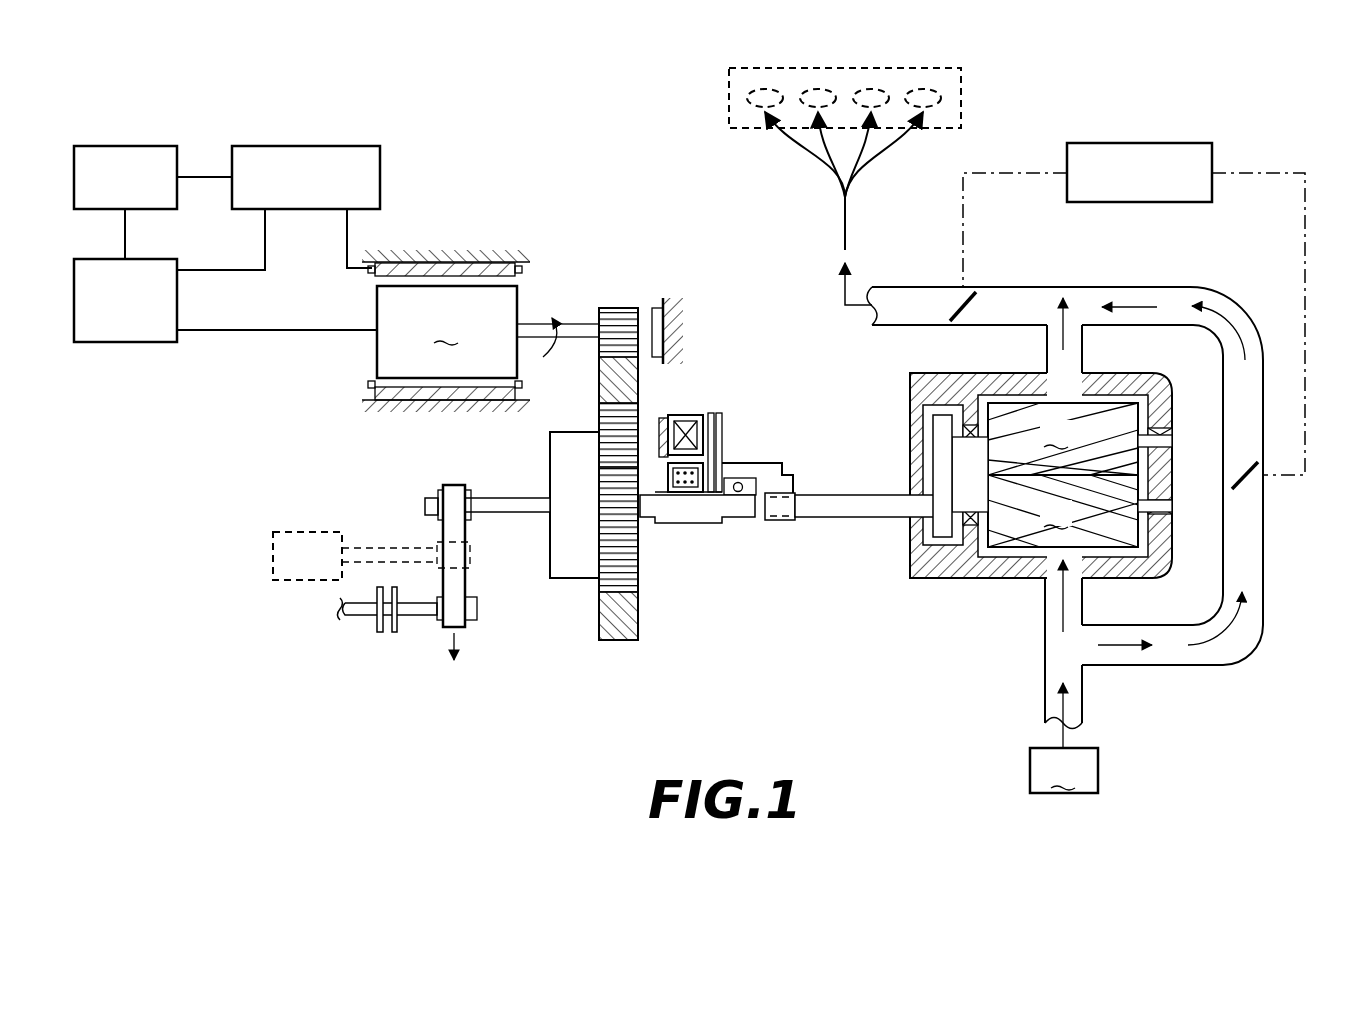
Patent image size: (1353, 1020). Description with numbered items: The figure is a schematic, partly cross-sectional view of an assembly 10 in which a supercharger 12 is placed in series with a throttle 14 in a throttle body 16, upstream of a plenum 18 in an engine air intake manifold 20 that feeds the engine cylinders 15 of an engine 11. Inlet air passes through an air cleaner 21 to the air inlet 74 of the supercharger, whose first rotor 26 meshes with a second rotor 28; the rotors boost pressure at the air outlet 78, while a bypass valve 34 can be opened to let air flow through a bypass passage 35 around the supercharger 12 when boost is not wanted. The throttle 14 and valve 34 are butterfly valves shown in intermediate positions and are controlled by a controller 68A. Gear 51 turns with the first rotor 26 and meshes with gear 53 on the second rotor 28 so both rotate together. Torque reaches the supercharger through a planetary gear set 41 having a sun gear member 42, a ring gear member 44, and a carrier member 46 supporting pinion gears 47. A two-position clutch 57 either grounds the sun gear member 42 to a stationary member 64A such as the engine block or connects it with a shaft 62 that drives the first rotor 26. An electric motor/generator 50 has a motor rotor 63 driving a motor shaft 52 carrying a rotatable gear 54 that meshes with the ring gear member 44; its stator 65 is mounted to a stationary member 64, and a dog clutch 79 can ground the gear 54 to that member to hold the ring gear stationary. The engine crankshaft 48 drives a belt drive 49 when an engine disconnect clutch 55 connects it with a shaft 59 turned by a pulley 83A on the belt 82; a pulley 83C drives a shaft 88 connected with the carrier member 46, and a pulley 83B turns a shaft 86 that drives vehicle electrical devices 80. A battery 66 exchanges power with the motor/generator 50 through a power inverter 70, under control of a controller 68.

The assembly 10 is at (1229, 263).
The engine 11 is at (729, 100).
The supercharger 12 is at (1160, 378).
The throttle 14 is at (950, 322).
The engine cylinders 15 is at (765, 90).
The throttle body 16 is at (1008, 287).
The plenum 18 is at (928, 300).
The engine air intake manifold 20 is at (878, 326).
The air cleaner 21 is at (1064, 738).
The first rotor 26 is at (1063, 511).
The second rotor 28 is at (1063, 439).
The bypass valve 34 is at (1228, 480).
The bypass passage 35 is at (1265, 530).
The planetary gear set 41 is at (570, 612).
The sun gear member 42 is at (618, 500).
The ring gear member 44 is at (612, 380).
The carrier member 46 is at (550, 448).
The pinion gears 47 is at (612, 425).
The engine crankshaft 48 is at (355, 615).
The belt drive 49 is at (400, 498).
The electric motor/generator 50 is at (328, 348).
The gear 51 is at (942, 540).
The motor shaft 52 is at (578, 322).
The gear 53 is at (942, 415).
The rotatable gear 54 is at (618, 308).
The engine disconnect clutch 55 is at (360, 658).
The two-position clutch 57 is at (750, 438).
The shaft 59 is at (420, 615).
The shaft 62 is at (835, 520).
The motor rotor 63 is at (447, 332).
The stationary member 64 is at (483, 250).
The stationary member 64A is at (683, 340).
The stator 65 is at (376, 390).
The battery 66 is at (125, 342).
The controller 68 is at (135, 146).
The controller 68A is at (1130, 143).
The power inverter 70 is at (283, 146).
The air inlet 74 is at (1082, 605).
The air outlet 78 is at (1082, 352).
The dog clutch 79 is at (656, 294).
The vehicle electrical devices 80 is at (300, 532).
The belt 82 is at (470, 583).
The pulley 83A is at (437, 627).
The pulley 83B is at (470, 555).
The pulley 83C is at (437, 485).
The shaft 86 is at (395, 548).
The shaft 88 is at (503, 498).